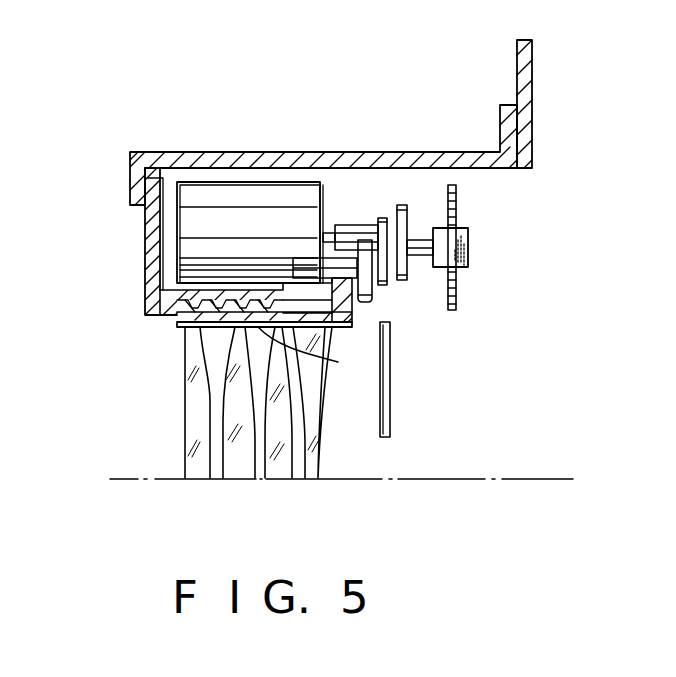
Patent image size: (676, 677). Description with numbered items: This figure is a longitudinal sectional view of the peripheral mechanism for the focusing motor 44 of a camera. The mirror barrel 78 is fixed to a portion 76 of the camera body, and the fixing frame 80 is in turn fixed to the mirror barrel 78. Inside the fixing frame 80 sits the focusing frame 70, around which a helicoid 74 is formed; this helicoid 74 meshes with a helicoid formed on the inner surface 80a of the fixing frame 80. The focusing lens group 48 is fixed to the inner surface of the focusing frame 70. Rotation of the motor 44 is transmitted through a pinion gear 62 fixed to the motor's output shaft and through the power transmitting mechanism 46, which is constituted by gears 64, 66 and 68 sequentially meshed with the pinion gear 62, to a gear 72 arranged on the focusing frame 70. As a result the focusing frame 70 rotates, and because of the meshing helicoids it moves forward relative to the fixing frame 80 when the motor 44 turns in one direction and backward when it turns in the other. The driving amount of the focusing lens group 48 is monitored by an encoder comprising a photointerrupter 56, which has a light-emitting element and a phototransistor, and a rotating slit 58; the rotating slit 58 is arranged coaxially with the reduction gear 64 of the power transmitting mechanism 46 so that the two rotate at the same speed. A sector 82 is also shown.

The motor 44 is at (207, 182).
The power transmitting mechanism 46 is at (477, 106).
The focusing lens group 48 is at (177, 484).
The photointerrupter 56 is at (468, 247).
The rotating slit 58 is at (457, 203).
The pinion gear 62 is at (404, 205).
The reduction gear 64 is at (383, 218).
The gear 66 is at (368, 225).
The gear 68 is at (343, 225).
The focusing frame 70 is at (177, 327).
The gear 72 is at (355, 310).
The helicoid 74 is at (312, 353).
The portion of a camera body 76 is at (532, 68).
The mirror barrel 78 is at (262, 158).
The fixing frame 80 is at (148, 252).
The inner surface of the fixing frame 80a is at (160, 300).
The sector 82 is at (390, 412).